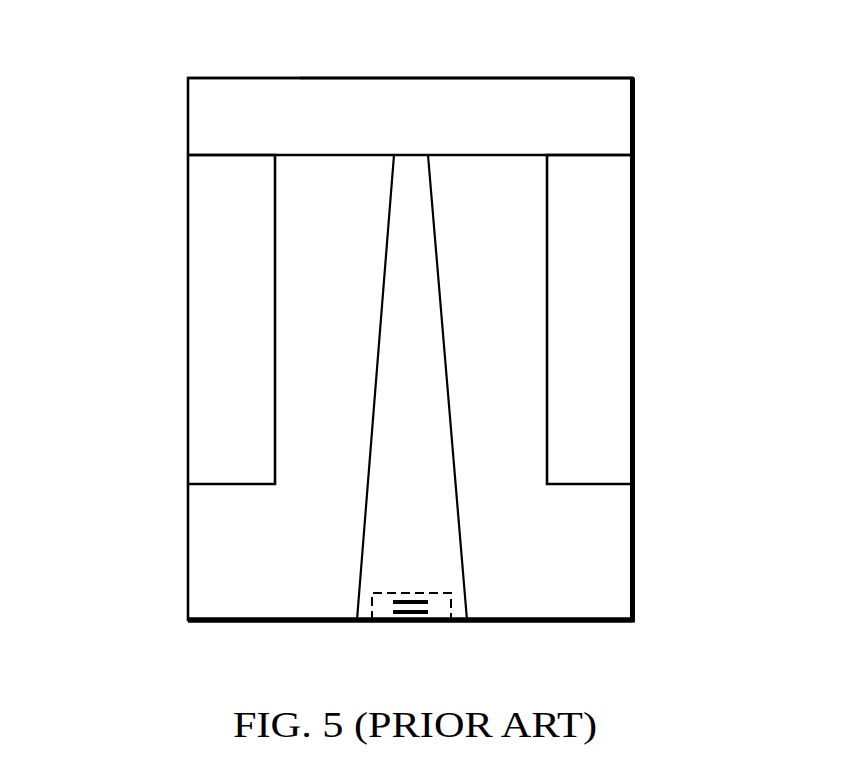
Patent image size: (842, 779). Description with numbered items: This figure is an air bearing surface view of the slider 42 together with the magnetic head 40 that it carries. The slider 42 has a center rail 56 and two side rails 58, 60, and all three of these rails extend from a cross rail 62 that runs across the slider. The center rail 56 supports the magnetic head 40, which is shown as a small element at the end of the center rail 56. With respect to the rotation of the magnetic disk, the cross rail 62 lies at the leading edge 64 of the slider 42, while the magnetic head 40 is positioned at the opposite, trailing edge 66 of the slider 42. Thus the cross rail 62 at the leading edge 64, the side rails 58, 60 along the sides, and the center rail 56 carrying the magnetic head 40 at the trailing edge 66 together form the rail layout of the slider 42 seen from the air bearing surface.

The slider 42 is at (165, 565).
The cross rail 62 is at (323, 85).
The leading edge 64 is at (477, 78).
The side rail 58 is at (200, 225).
The side rail 60 is at (607, 226).
The center rail 56 is at (397, 266).
The magnetic head 40 is at (383, 627).
The trailing edge 66 is at (529, 623).